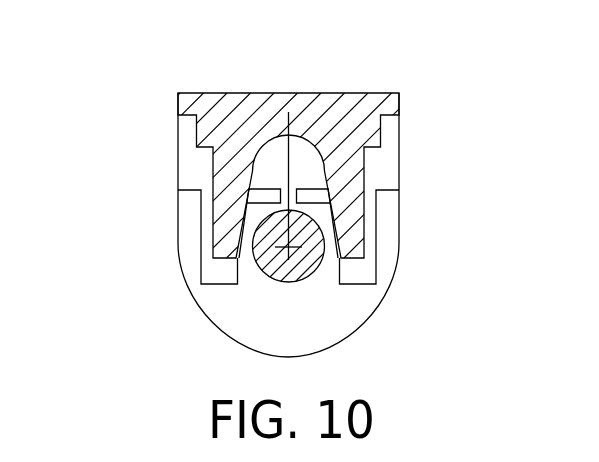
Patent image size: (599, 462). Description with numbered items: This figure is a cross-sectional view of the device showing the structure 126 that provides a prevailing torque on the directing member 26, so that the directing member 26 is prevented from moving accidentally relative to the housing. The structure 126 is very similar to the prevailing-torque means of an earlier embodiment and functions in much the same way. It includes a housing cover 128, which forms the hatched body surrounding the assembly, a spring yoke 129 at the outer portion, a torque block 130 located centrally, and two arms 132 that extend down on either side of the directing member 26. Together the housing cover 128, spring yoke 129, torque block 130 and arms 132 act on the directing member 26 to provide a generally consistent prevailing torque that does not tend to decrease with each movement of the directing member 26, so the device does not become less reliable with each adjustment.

The structure 126 is at (428, 173).
The housing cover 128 is at (328, 105).
The spring yoke 129 is at (213, 233).
The torque block 130 is at (330, 268).
The arms 132 is at (252, 203).
The directing member 26 is at (282, 272).